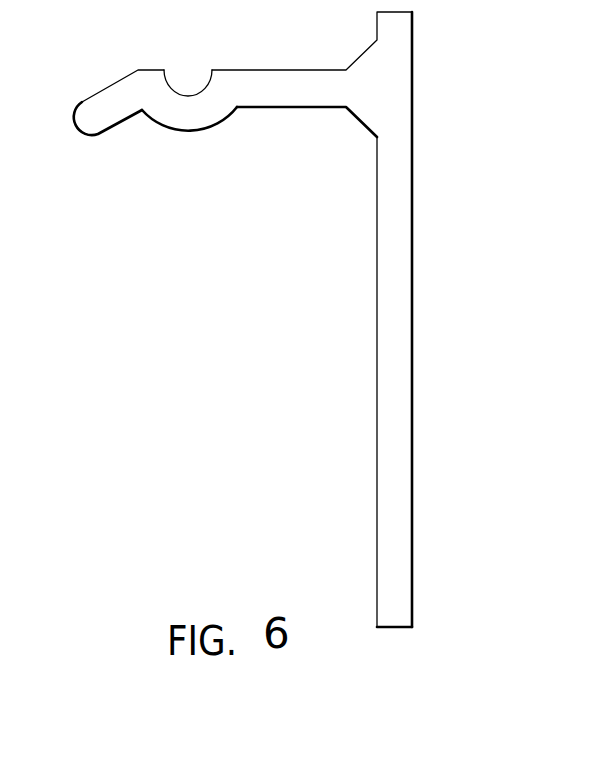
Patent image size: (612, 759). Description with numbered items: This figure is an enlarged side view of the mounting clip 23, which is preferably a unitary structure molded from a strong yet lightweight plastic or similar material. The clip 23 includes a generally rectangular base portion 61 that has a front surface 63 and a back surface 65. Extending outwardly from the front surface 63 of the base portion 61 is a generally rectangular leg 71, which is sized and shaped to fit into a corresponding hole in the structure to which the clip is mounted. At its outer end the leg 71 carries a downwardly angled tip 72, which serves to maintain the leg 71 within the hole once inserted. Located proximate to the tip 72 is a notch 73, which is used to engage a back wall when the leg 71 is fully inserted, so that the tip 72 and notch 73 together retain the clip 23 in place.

The mounting clip 23 is at (227, 408).
The base portion 61 is at (412, 492).
The front surface 63 is at (377, 377).
The back surface 65 is at (414, 258).
The leg 71 is at (290, 97).
The downwardly angled tip 72 is at (93, 108).
The notch 73 is at (192, 98).